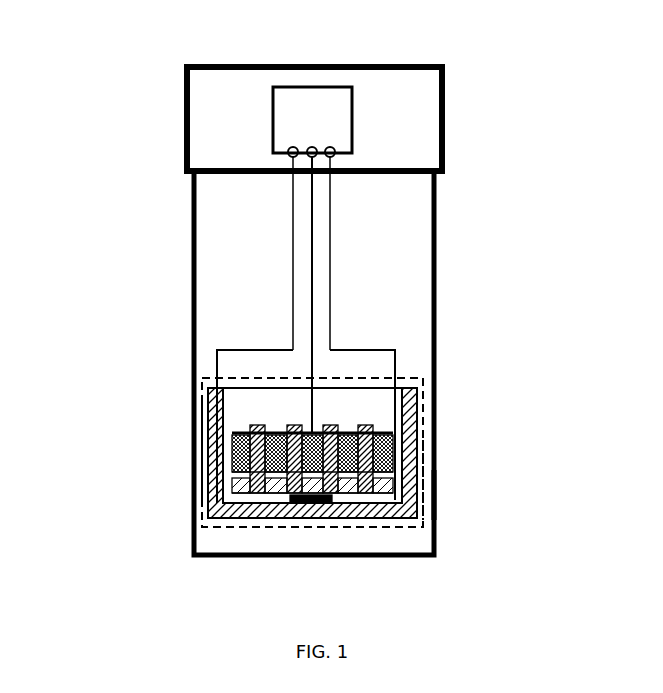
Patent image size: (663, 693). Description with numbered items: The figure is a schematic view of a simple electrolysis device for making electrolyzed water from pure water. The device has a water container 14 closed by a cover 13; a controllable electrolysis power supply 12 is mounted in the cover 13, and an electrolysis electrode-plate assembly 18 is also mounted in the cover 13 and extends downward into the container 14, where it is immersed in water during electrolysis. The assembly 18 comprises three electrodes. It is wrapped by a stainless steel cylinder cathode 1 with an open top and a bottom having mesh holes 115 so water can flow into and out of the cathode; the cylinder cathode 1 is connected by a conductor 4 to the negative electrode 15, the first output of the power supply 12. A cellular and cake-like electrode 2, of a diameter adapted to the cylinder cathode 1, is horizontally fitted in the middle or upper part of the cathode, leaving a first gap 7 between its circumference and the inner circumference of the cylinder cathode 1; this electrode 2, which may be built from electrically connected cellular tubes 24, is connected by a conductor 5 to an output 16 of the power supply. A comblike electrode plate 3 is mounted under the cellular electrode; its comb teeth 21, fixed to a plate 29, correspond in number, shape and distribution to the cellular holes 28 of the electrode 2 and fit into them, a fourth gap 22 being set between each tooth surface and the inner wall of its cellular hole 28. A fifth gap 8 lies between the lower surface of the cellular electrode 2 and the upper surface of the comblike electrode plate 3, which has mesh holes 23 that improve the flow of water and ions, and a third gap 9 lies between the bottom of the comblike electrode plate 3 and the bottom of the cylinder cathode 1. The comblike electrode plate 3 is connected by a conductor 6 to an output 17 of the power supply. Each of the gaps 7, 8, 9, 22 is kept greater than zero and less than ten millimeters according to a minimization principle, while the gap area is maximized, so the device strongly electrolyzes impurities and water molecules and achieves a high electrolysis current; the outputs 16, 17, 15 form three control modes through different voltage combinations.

The cylinder cathode 1 is at (409, 387).
The cellular and cake-like electrode 2 is at (402, 427).
The comblike electrode plate 3 is at (417, 461).
The conductor 4 is at (293, 340).
The conductor 5 is at (330, 333).
The conductor 6 is at (352, 350).
The first gap 7 is at (214, 428).
The fifth gap 8 is at (204, 450).
The third gap 9 is at (194, 458).
The electrolysis power supply 12 is at (317, 120).
The cover 13 is at (430, 130).
The water container 14 is at (428, 492).
The negative electrode 15 is at (290, 148).
The output 16 is at (309, 148).
The output 17 is at (334, 148).
The electrolysis electrode-plate assembly 18 is at (367, 377).
The comb teeth 21 is at (296, 428).
The fourth gap 22 is at (245, 432).
The mesh holes 23 is at (250, 515).
The cellular tubes 24 is at (383, 503).
The cellular holes 28 is at (428, 492).
The plate 29 is at (325, 515).
The mesh holes 115 is at (370, 513).